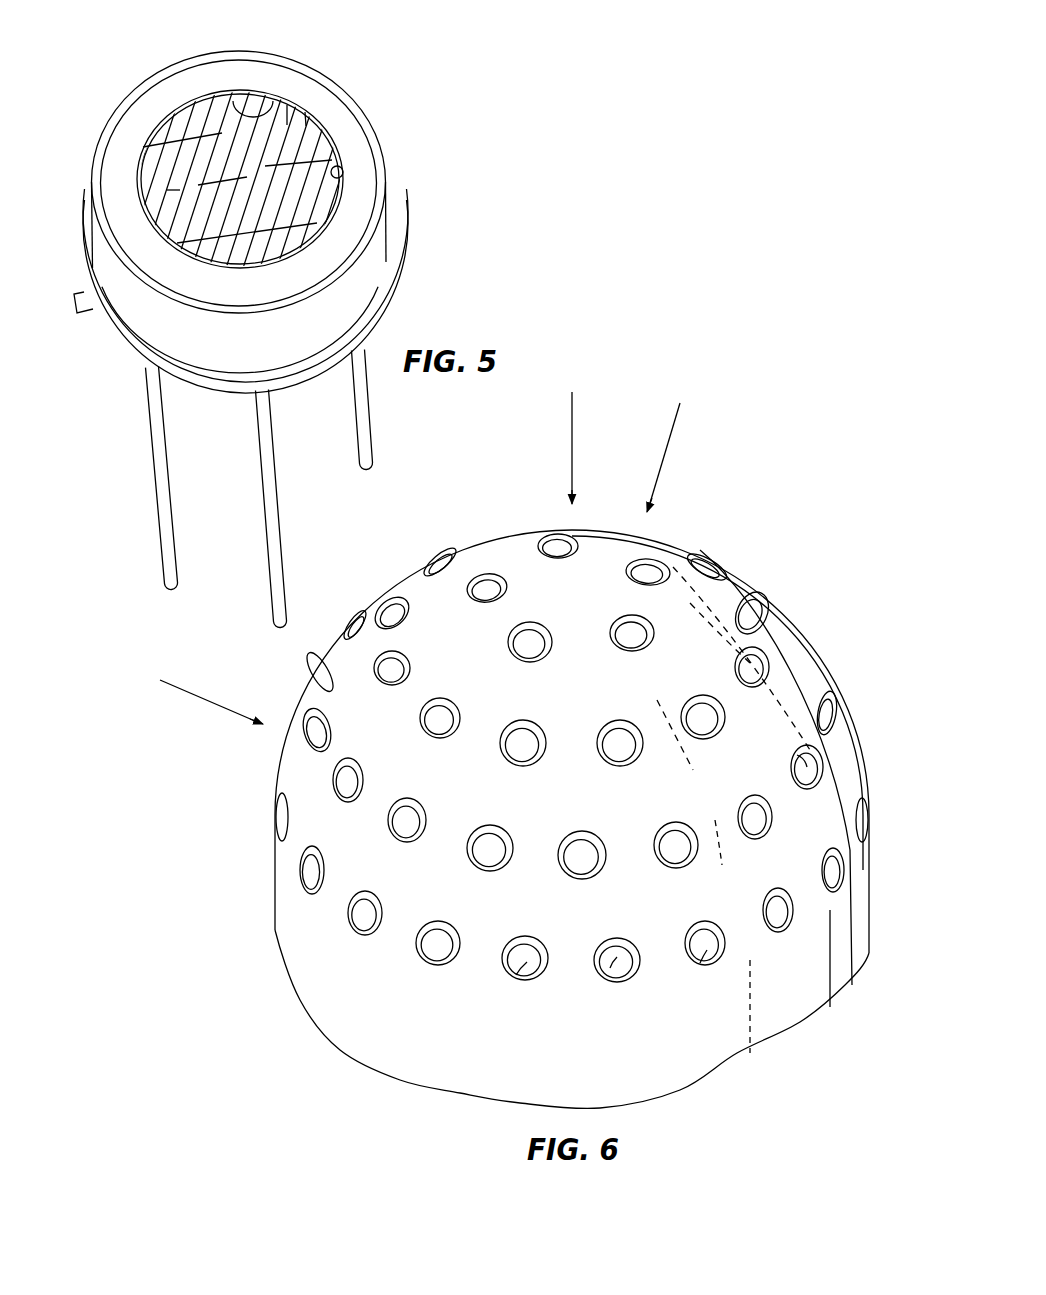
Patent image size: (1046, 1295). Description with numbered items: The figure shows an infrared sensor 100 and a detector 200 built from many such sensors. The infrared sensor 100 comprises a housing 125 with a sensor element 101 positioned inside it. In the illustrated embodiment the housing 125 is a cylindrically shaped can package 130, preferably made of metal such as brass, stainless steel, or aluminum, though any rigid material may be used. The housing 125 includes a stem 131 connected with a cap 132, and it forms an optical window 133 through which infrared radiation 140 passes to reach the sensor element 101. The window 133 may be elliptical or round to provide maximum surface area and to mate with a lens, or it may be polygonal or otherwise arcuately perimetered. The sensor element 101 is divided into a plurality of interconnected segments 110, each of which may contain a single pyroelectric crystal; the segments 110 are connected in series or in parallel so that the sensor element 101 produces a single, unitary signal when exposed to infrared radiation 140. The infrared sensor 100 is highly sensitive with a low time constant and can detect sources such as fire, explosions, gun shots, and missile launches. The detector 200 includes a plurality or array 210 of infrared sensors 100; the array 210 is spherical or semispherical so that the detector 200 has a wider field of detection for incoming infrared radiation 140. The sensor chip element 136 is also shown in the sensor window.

In FIG. 5, the infrared sensor 100 is at (250, 327).
In FIG. 6, the infrared sensor 100 is at (606, 648).
In FIG. 6, the sensor element 101 is at (797, 755).
In FIG. 5, the segments 110 is at (260, 115).
In FIG. 5, the housing 125 is at (126, 337).
In FIG. 5, the can package 130 is at (250, 222).
In FIG. 5, the stem 131 is at (398, 277).
In FIG. 5, the cap 132 is at (381, 243).
In FIG. 5, the optical window 133 is at (341, 167).
In FIG. 5, the sensing element / chip 136 is at (230, 110).
In FIG. 6, the infrared radiation 140 is at (574, 447).
In FIG. 6, the detector 200 is at (580, 787).
In FIG. 6, the array 210 is at (805, 588).